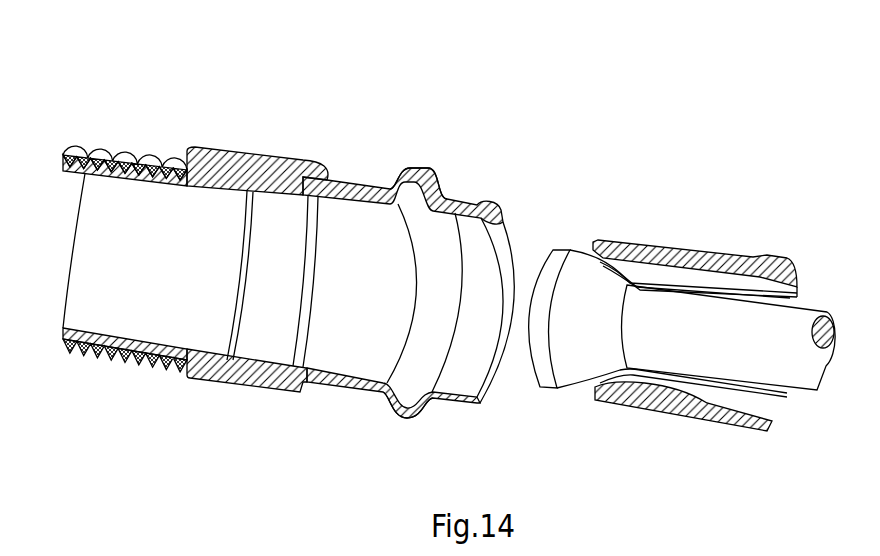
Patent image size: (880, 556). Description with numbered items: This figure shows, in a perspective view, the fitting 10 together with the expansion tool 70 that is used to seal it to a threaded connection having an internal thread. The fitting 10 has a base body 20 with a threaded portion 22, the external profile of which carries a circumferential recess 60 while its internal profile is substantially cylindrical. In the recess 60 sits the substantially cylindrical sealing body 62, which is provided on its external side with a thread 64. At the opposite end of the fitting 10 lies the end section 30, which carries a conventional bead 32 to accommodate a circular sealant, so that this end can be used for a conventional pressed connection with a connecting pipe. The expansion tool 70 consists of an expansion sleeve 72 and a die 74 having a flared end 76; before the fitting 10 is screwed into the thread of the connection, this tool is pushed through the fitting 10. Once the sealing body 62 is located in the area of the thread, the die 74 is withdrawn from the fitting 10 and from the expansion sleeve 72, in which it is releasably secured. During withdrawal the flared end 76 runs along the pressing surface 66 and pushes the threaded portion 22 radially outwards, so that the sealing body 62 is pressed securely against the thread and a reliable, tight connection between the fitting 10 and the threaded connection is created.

The fitting 10 is at (357, 123).
The base body 20 is at (273, 138).
The threaded portion 22 is at (224, 156).
The end section 30 is at (477, 180).
The bead 32 is at (430, 180).
The circumferential recess 60 is at (143, 172).
The sealing body 62 is at (110, 133).
The thread 64 is at (153, 150).
The pressing surface 66 is at (93, 178).
The expansion tool 70 is at (717, 217).
The expansion sleeve 72 is at (663, 400).
The die 74 is at (710, 355).
The flared end 76 is at (543, 372).